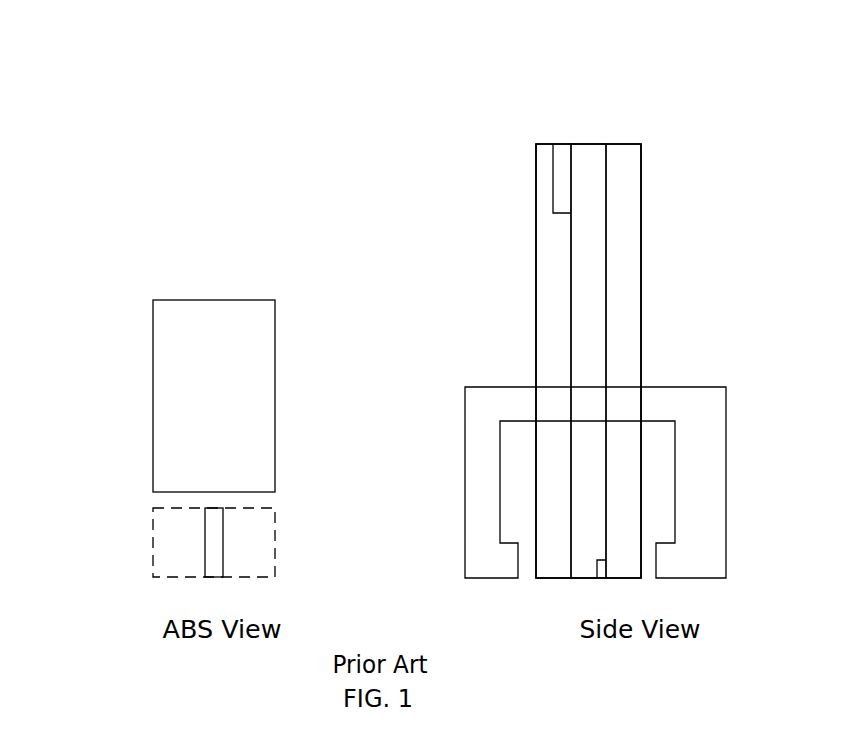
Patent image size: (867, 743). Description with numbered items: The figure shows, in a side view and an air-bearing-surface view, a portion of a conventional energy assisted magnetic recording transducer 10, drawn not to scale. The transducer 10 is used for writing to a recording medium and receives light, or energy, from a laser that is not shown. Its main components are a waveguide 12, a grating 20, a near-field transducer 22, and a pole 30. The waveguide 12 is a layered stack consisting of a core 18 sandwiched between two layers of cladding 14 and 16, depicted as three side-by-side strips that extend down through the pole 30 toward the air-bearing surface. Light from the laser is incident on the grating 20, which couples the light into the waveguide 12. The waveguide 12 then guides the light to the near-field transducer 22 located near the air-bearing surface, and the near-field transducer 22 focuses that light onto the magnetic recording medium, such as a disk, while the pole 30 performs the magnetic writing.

The energy assisted magnetic recording (EAMR) transducer 10 is at (365, 103).
The waveguide 12 is at (684, 246).
The cladding 14 is at (641, 183).
The cladding 16 is at (536, 232).
The core 18 is at (608, 196).
The grating 20 is at (563, 144).
The near-field transducer (NFT) 22 is at (598, 578).
The pole 30 is at (465, 525).